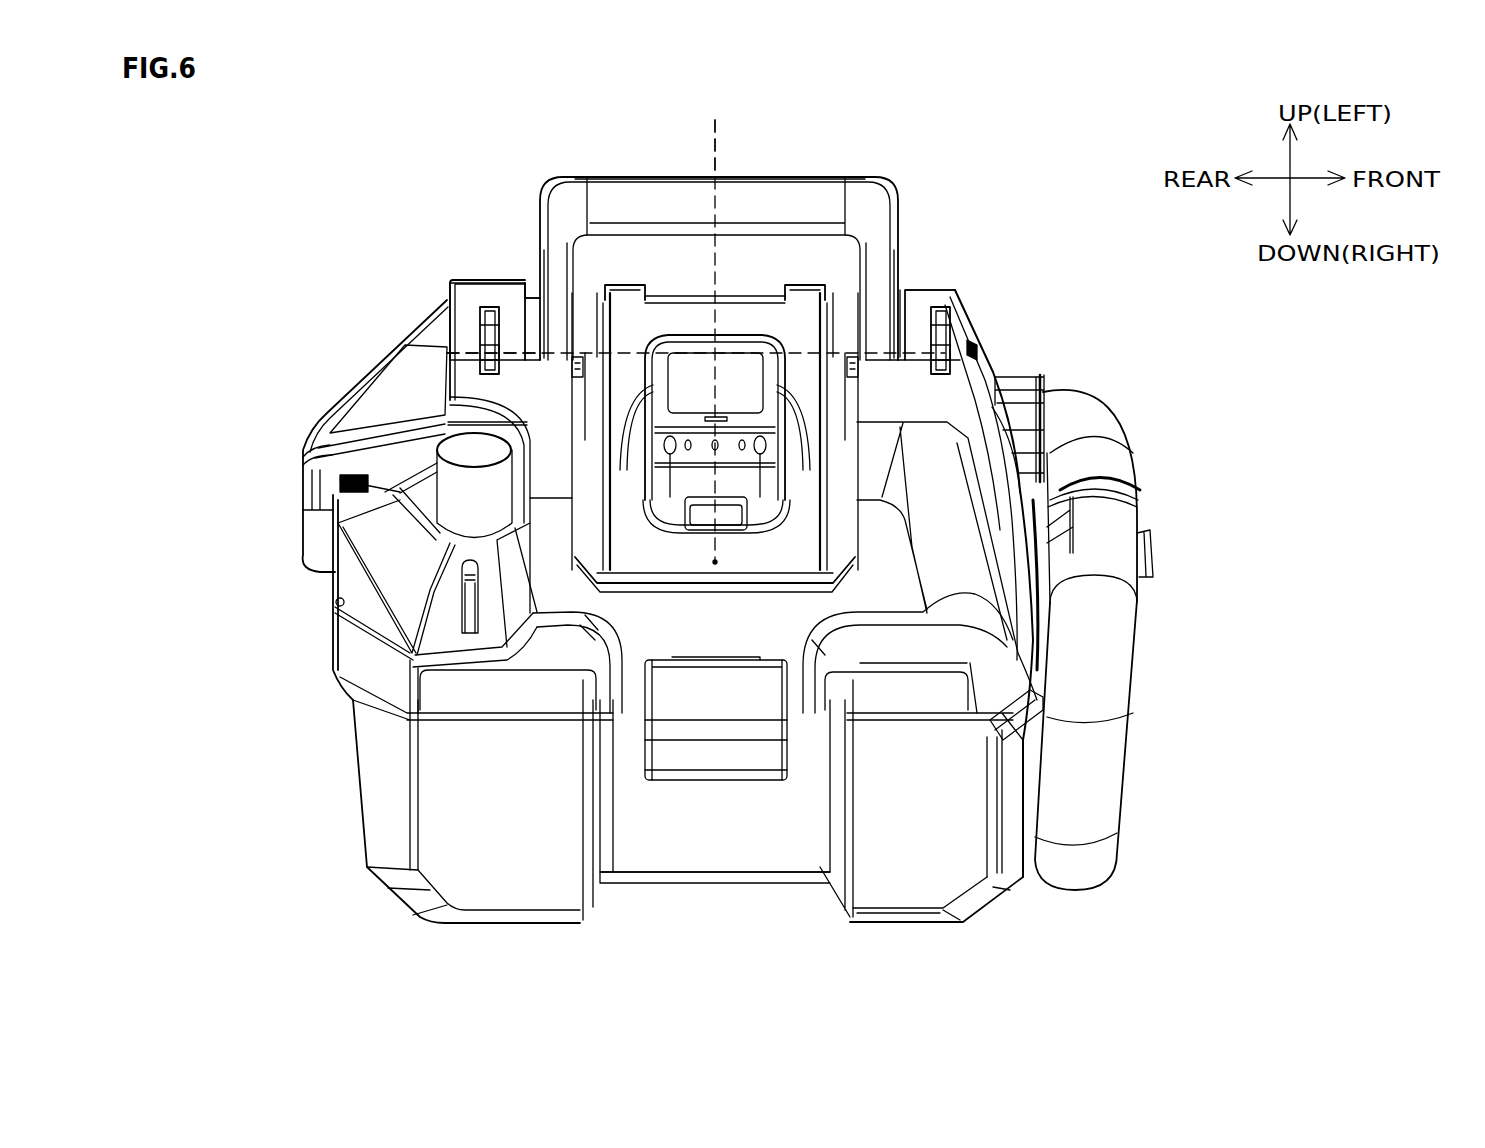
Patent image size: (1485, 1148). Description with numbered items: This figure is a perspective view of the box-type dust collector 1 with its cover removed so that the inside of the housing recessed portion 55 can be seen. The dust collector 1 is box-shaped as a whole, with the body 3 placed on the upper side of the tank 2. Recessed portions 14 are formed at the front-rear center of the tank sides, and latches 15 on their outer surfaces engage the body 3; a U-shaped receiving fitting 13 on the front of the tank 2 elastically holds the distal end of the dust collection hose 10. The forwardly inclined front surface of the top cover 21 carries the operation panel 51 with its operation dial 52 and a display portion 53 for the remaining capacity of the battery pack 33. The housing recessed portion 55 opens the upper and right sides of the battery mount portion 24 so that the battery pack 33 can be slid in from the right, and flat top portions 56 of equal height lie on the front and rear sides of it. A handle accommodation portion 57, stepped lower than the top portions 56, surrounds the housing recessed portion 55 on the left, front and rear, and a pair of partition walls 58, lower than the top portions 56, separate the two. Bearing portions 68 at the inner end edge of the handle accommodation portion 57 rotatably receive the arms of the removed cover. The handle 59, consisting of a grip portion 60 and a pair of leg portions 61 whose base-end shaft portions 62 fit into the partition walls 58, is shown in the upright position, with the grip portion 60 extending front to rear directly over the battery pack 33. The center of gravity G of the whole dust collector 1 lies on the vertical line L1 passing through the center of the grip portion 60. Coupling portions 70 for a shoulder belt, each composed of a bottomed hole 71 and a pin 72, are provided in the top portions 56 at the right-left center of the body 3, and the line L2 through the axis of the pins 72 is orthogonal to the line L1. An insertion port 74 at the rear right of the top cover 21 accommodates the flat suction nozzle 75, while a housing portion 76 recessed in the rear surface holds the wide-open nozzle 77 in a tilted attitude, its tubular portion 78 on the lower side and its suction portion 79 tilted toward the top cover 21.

The dust collector 1 is at (1028, 197).
The tank 2 is at (353, 775).
The body 3 is at (461, 279).
The dust collection hose 10 is at (1123, 657).
The receiving fitting 13 is at (1157, 557).
The recessed portion 14 is at (757, 857).
The latch 15 is at (682, 753).
The top cover 21 is at (965, 310).
The battery mount portion 24 is at (625, 425).
The battery pack 33 is at (742, 367).
The operation panel 51 is at (990, 440).
The operation dial 52 is at (1025, 420).
The display portion 53 is at (1087, 487).
The housing recessed portion 55 is at (675, 318).
The top portion 56 is at (458, 293).
The handle accommodation portion 57 is at (588, 312).
The partition wall 58 is at (595, 345).
The handle 59 is at (770, 177).
The grip portion 60 is at (690, 177).
The leg portion 61 is at (547, 247).
The shaft portion 62 is at (572, 368).
The bearing portion 68 is at (640, 287).
The coupling portion 70 is at (490, 305).
The bottomed hole 71 is at (478, 328).
The pin 72 is at (480, 352).
The insertion port 74 is at (467, 508).
The suction nozzle 75 is at (407, 510).
The housing portion 76 is at (373, 477).
The wide-open nozzle 77 is at (330, 405).
The tubular portion 78 is at (315, 553).
The suction portion 79 is at (375, 393).
The center of gravity G is at (717, 563).
The line L1 is at (731, 127).
The line L2 is at (518, 380).